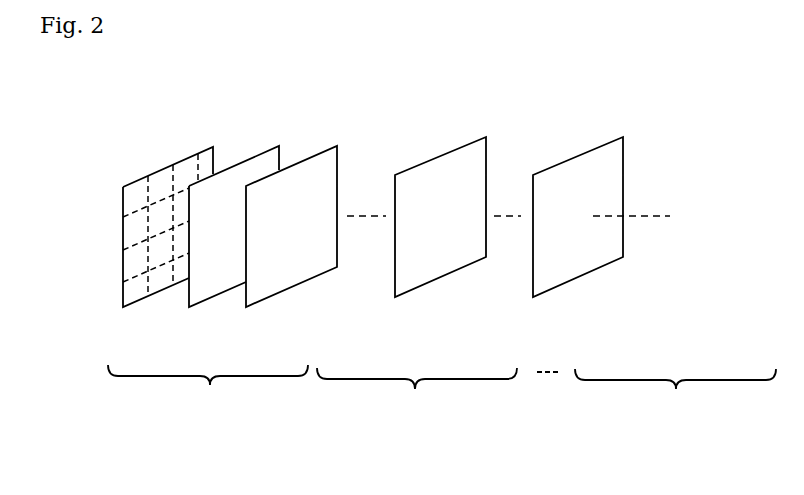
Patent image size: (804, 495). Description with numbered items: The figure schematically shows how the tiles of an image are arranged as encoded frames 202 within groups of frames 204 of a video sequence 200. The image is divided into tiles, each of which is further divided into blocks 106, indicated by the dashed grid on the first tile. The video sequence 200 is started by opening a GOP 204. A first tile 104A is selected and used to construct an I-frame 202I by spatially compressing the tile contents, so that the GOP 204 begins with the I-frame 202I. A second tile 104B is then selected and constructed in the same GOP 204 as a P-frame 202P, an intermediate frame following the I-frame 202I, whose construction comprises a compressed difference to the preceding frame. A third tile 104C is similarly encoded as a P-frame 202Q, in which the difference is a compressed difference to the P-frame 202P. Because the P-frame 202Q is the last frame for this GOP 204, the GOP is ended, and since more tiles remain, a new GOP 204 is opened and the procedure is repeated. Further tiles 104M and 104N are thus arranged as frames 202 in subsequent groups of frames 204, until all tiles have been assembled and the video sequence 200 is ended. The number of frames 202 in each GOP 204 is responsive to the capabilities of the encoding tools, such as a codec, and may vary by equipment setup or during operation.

The video sequence 200 is at (568, 40).
The tile 104A is at (157, 166).
The tile 104B is at (238, 187).
The tile 104C is at (295, 187).
The tile 104M is at (438, 187).
The tile 104N is at (570, 178).
The block 106 is at (130, 237).
The I-frame 202I is at (147, 297).
The P-frame 202P is at (225, 297).
The P-frame 202Q is at (282, 297).
The frame 202 is at (442, 278).
The group of frames (GOP) 204 is at (208, 388).